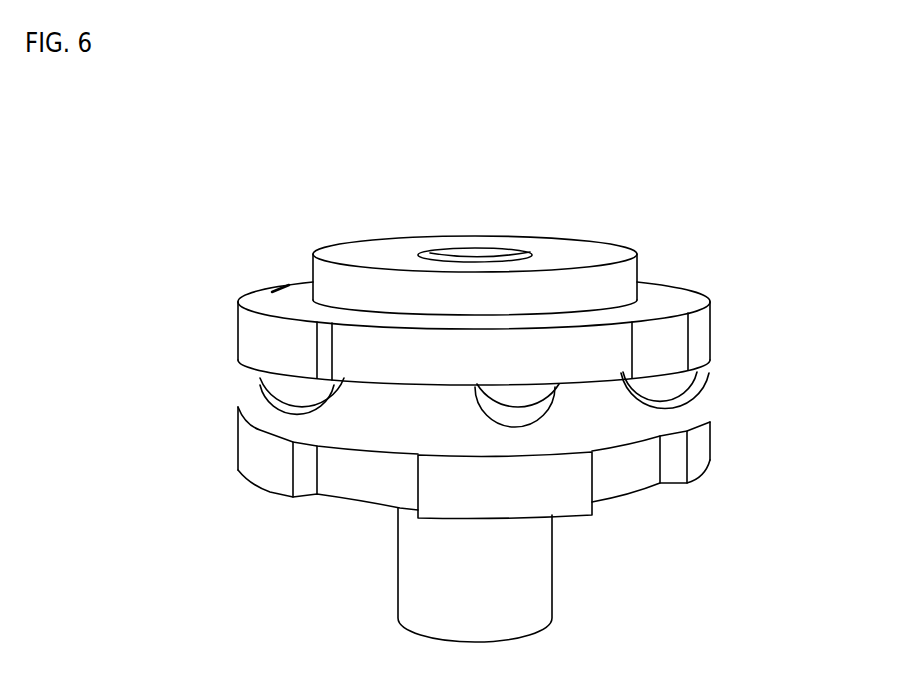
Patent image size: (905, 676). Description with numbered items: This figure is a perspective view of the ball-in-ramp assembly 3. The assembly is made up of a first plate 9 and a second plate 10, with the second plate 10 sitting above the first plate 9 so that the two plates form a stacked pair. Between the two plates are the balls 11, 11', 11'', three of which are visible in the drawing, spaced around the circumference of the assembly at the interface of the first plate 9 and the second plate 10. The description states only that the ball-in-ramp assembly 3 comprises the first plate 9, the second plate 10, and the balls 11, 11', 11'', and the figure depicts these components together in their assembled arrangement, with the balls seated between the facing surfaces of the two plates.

The ball-in-ramp assembly 3 is at (690, 200).
The first plate 9 is at (620, 472).
The second plate 10 is at (708, 322).
The ball 11 is at (231, 402).
The ball 11' is at (574, 497).
The ball 11'' is at (729, 406).